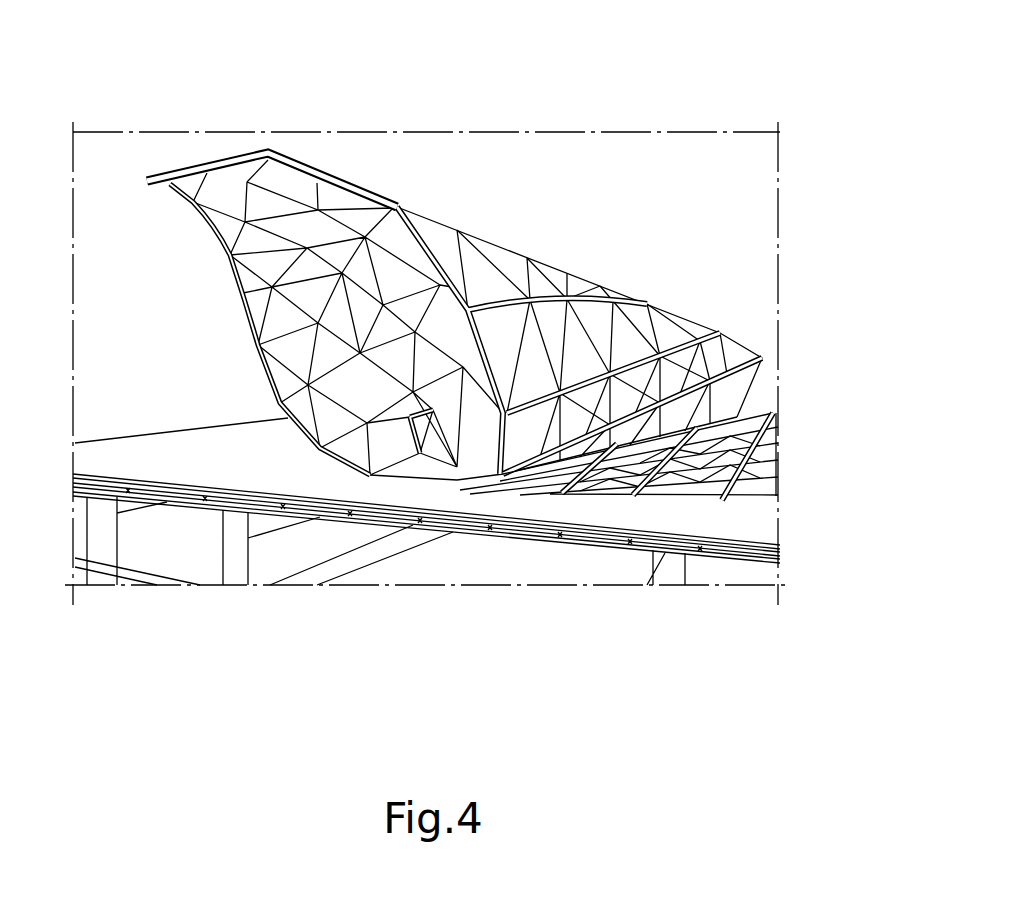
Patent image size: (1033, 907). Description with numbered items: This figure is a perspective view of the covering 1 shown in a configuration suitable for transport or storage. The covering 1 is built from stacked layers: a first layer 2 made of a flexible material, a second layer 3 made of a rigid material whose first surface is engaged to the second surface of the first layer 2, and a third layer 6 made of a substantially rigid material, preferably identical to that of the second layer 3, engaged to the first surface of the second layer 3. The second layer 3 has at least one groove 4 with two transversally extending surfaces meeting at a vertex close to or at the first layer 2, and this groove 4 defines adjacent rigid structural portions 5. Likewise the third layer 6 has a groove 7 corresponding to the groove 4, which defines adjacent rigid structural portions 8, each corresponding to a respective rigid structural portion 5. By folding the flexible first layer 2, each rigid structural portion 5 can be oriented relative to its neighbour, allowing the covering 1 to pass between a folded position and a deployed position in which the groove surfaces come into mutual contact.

The covering 1 is at (684, 100).
The first layer 2 is at (204, 158).
The second layer 3 is at (751, 482).
The groove 4 is at (690, 487).
The rigid structural portion 5 is at (720, 462).
The third layer 6 is at (485, 230).
The groove 7 is at (694, 323).
The rigid structural portion 8 is at (614, 304).